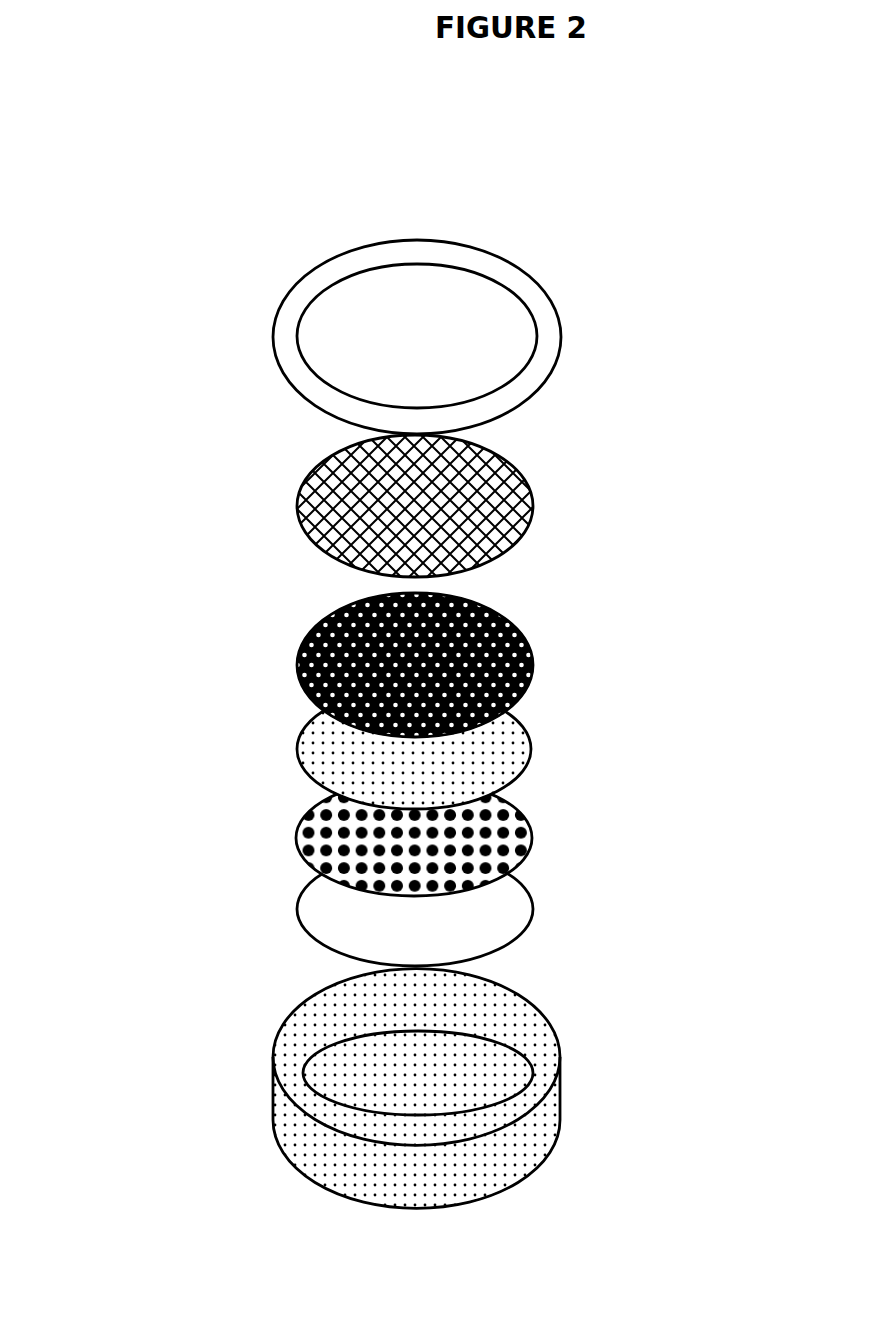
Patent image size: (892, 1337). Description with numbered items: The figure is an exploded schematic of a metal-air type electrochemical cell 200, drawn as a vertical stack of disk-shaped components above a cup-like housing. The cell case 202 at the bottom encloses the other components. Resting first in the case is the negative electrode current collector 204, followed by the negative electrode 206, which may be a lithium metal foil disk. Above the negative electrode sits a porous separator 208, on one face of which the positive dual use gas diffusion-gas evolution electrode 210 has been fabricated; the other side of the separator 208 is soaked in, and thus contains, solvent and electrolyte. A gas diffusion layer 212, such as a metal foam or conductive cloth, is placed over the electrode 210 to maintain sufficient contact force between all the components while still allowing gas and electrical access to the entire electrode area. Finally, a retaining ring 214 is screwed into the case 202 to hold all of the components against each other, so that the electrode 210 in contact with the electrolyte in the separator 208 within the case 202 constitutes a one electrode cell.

The electrochemical cell 200 is at (212, 204).
The cell case 202 is at (571, 1101).
The negative electrode current collector 204 is at (541, 905).
The negative electrode 206 is at (541, 821).
The porous separator 208 is at (546, 731).
The positive dual use gas diffusion-gas evolution electrode 210 is at (541, 658).
The gas diffusion layer 212 is at (561, 503).
The retaining ring 214 is at (573, 327).